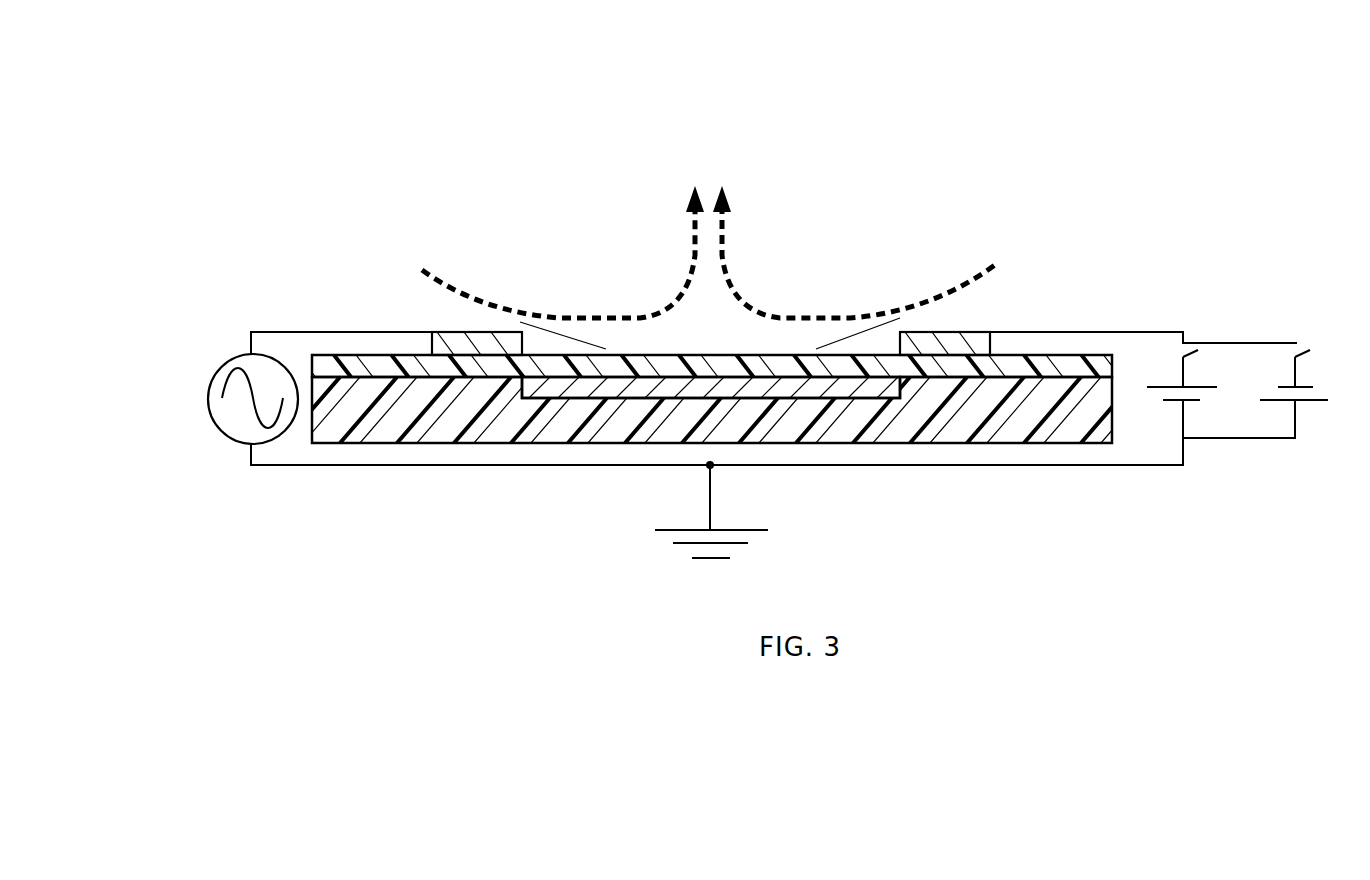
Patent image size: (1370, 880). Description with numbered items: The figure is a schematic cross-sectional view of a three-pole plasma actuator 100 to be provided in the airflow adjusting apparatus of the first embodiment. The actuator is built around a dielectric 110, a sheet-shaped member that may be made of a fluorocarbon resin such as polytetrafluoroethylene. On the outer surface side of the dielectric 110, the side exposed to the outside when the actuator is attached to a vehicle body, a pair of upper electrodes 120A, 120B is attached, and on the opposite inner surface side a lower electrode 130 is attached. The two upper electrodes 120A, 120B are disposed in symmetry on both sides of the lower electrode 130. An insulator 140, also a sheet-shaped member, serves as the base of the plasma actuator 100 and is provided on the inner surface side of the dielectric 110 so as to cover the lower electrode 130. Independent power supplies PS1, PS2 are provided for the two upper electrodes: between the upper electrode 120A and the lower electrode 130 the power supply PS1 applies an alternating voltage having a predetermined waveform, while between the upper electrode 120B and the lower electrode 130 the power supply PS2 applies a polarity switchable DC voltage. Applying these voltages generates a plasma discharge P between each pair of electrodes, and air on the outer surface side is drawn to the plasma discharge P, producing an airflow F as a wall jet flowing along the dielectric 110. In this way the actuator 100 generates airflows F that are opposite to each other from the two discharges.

The three-pole plasma actuator 100 is at (373, 230).
The dielectric 110 is at (408, 356).
The upper electrode 120A is at (470, 332).
The upper electrode 120B is at (950, 331).
The lower electrode 130 is at (814, 401).
The insulator 140 is at (940, 438).
The plasma discharge P is at (557, 326).
The airflow F is at (713, 262).
The power supply PS1 is at (222, 367).
The power supply PS2 is at (1253, 333).